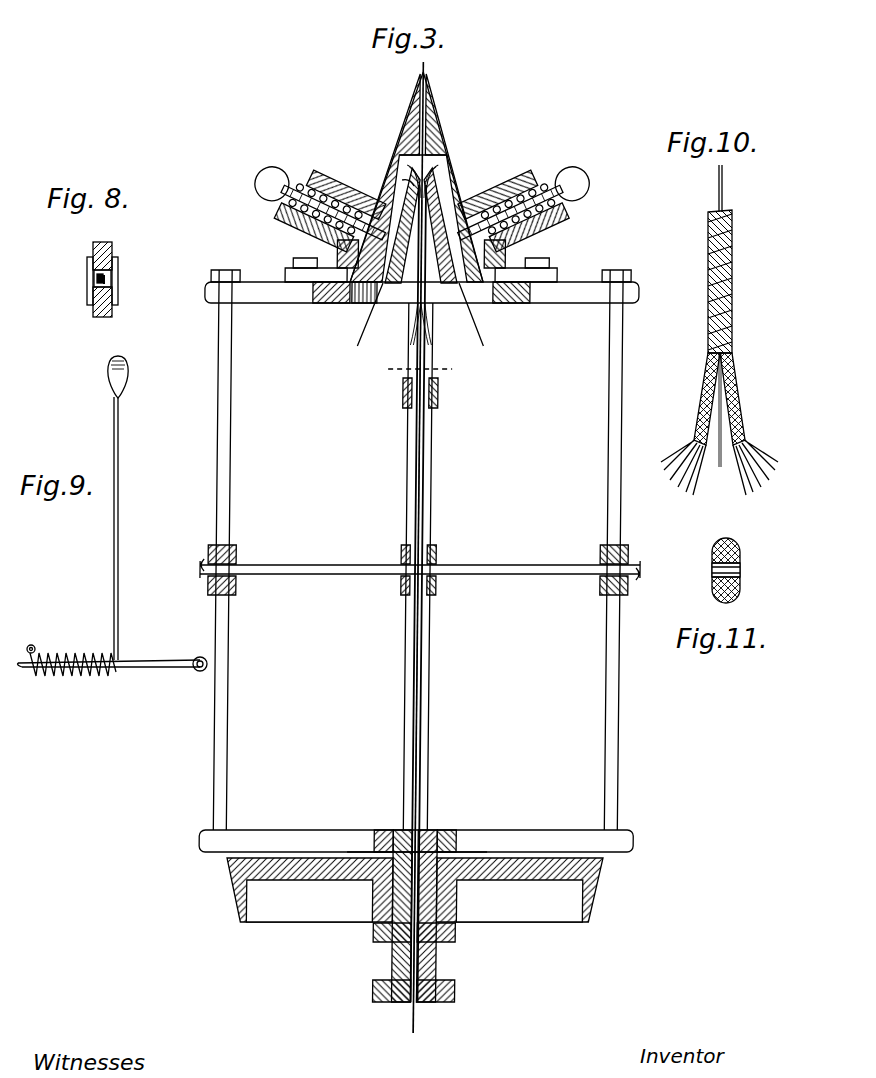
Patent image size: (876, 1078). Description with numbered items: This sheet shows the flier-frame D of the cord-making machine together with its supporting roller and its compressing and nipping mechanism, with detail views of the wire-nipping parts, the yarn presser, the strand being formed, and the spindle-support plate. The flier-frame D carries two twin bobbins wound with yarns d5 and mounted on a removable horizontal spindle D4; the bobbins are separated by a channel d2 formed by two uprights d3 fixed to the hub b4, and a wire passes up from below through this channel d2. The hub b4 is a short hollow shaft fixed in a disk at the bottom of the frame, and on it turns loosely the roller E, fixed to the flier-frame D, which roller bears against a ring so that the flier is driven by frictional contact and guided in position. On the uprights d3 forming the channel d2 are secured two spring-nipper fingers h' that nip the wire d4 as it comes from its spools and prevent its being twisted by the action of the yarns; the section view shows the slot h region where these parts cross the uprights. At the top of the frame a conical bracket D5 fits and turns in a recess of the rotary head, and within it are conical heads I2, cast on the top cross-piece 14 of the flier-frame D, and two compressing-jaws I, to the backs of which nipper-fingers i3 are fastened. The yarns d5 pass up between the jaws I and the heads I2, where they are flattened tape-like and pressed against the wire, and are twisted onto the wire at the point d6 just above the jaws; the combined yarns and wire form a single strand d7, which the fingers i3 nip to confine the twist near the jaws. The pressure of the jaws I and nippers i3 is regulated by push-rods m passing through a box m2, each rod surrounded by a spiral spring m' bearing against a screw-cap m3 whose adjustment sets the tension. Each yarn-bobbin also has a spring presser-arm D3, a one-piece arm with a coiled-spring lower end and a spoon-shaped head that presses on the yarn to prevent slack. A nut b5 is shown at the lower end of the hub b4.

In FIG. 3, the top cross-piece 14 is at (580, 289).
In FIG. 3, the flier-frame D is at (228, 686).
In FIG. 3, the conical bracket D5 is at (454, 147).
In FIG. 3, the single strand d7 is at (422, 66).
In FIG. 10, the single strand d7 is at (730, 330).
In FIG. 3, the compressing-jaws I is at (380, 290).
In FIG. 3, the conical heads I2 is at (431, 270).
In FIG. 3, the nipper-fingers i3 is at (413, 173).
In FIG. 3, the point of twisting d6 is at (401, 180).
In FIG. 3, the push-rod m is at (420, 183).
In FIG. 3, the spiral spring m' is at (424, 187).
In FIG. 3, the screw-cap m3 is at (300, 233).
In FIG. 3, the box m2 is at (330, 252).
In FIG. 3, the yarns d5 is at (407, 335).
In FIG. 10, the yarns d5 is at (718, 437).
In FIG. 3, the spring-nipper fingers h' is at (408, 374).
In FIG. 3, the uprights d3 is at (411, 515).
In FIG. 8, the uprights d3 is at (101, 242).
In FIG. 3, the channel d2 is at (429, 502).
In FIG. 8, the channel d2 is at (108, 286).
In FIG. 3, the wire d4 is at (423, 466).
In FIG. 8, the wire d4 is at (98, 274).
In FIG. 10, the wire d4 is at (715, 418).
In FIG. 3, the removable horizontal spindle D4 is at (512, 566).
In FIG. 3, the roller E is at (236, 884).
In FIG. 3, the hub b4 is at (399, 830).
In FIG. 3, the nut b5 is at (383, 934).
In FIG. 8, the slot h is at (101, 281).
In FIG. 9, the spring presser-arm D3 is at (113, 522).